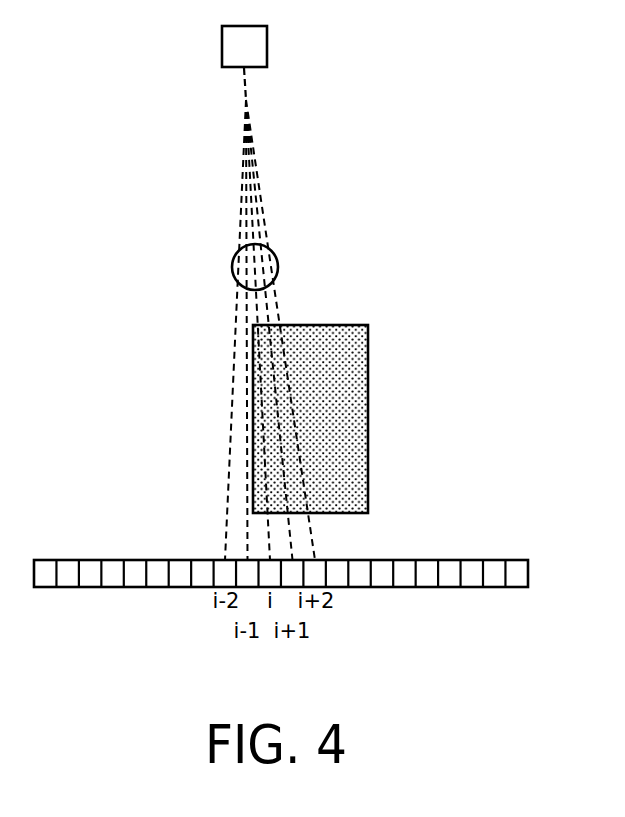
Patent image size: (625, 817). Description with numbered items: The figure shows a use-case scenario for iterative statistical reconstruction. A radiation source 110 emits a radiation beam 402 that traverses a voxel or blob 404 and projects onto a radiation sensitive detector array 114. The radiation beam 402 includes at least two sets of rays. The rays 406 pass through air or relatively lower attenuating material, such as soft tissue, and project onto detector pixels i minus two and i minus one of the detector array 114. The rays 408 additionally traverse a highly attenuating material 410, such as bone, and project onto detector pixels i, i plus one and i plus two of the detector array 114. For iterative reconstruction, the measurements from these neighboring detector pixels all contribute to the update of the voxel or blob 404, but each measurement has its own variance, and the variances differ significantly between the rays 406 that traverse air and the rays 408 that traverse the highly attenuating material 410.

The radiation source 110 is at (222, 46).
The radiation beam 402 is at (250, 98).
The voxel or blob 404 is at (254, 244).
The rays 406 is at (247, 356).
The rays 408 is at (262, 314).
The highly attenuating material 410 is at (366, 475).
The radiation sensitive detector array 114 is at (517, 560).